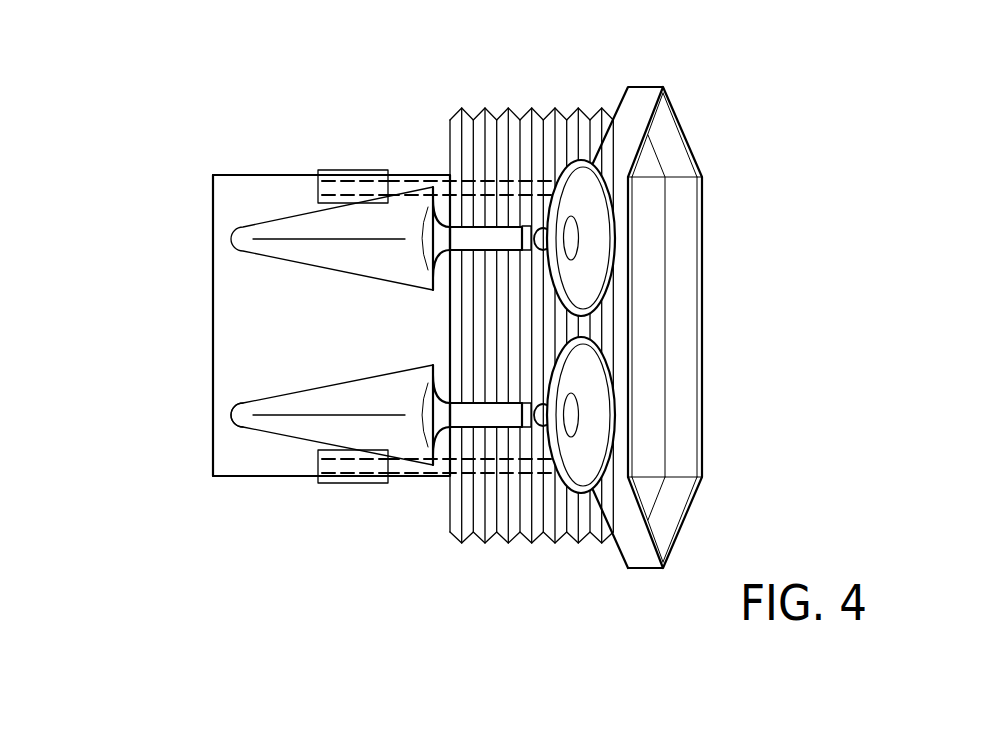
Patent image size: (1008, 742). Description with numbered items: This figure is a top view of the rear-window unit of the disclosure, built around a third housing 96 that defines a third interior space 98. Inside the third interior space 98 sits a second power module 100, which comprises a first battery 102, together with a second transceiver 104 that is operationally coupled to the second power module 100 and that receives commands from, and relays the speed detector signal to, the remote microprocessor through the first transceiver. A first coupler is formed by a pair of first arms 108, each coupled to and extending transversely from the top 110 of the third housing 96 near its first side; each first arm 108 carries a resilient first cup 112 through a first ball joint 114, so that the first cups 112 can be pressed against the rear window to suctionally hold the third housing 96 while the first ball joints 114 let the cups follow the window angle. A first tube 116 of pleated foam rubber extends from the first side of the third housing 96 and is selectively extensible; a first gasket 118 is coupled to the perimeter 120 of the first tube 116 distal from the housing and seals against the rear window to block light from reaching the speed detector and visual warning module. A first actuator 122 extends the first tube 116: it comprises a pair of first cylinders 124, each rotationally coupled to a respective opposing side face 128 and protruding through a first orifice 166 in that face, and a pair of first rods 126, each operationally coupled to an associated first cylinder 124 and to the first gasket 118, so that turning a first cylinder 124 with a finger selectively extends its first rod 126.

The third housing 96 is at (212, 197).
The third interior space 98 is at (257, 268).
The second power module 100 is at (243, 383).
The first battery 102 is at (243, 390).
The second transceiver 104 is at (243, 390).
The first arms 108 is at (430, 260).
The top 110 is at (293, 329).
The first cups 112 is at (613, 422).
The first ball joints 114 is at (592, 316).
The first tube 116 is at (532, 110).
The first gasket 118 is at (631, 99).
The perimeter 120 is at (607, 552).
The first actuator 122 is at (378, 170).
The first cylinders 124 is at (324, 170).
The first rods 126 is at (503, 473).
The opposing side faces 128 is at (247, 175).
The first orifice 166 is at (344, 175).